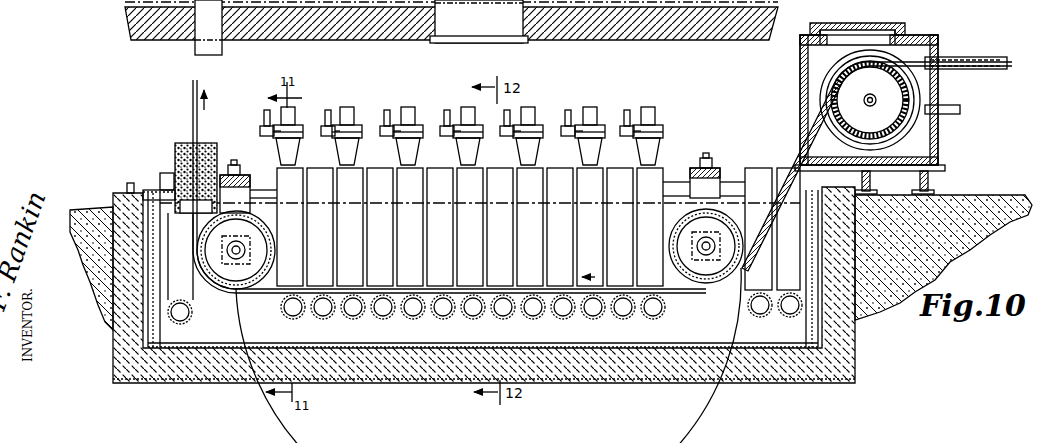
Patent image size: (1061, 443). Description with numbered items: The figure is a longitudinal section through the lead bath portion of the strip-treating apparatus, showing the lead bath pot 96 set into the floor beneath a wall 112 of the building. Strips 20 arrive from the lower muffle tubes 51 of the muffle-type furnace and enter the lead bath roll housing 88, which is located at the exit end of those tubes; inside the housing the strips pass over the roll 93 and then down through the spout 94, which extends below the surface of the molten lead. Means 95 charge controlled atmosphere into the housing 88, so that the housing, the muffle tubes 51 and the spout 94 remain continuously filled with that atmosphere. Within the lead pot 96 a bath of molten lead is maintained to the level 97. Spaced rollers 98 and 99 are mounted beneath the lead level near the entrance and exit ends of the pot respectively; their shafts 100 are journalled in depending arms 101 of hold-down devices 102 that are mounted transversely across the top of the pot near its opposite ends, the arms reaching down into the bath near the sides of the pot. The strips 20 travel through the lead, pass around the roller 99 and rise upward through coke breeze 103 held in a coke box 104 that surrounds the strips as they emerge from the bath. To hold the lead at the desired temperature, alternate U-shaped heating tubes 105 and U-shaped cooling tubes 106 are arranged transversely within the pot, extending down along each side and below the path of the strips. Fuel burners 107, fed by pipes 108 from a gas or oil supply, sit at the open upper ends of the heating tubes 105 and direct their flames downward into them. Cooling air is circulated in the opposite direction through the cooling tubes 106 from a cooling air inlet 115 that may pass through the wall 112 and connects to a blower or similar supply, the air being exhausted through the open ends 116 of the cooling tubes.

The strips 20 is at (190, 85).
The lower muffle tubes 51 is at (975, 57).
The lead bath roll housing 88 is at (942, 36).
The roll 93 is at (903, 90).
The spout 94 is at (790, 150).
The controlled atmosphere charging means 95 is at (946, 112).
The lead bath pot 96 is at (108, 190).
The lead level 97 is at (531, 190).
The roller 98 is at (718, 276).
The roller 99 is at (228, 290).
The roller shafts 100 is at (240, 258).
The depending arms 101 is at (245, 192).
The hold-down devices 102 is at (236, 165).
The coke breeze 103 is at (190, 143).
The coke box 104 is at (173, 162).
The U-shaped heating tubes 105 is at (410, 185).
The U-shaped cooling tubes 106 is at (323, 315).
The fuel burners 107 is at (295, 130).
The pipes 108 is at (266, 118).
The wall 112 is at (263, 22).
The cooling air inlet 115 is at (505, 15).
The open ends 116 is at (377, 168).